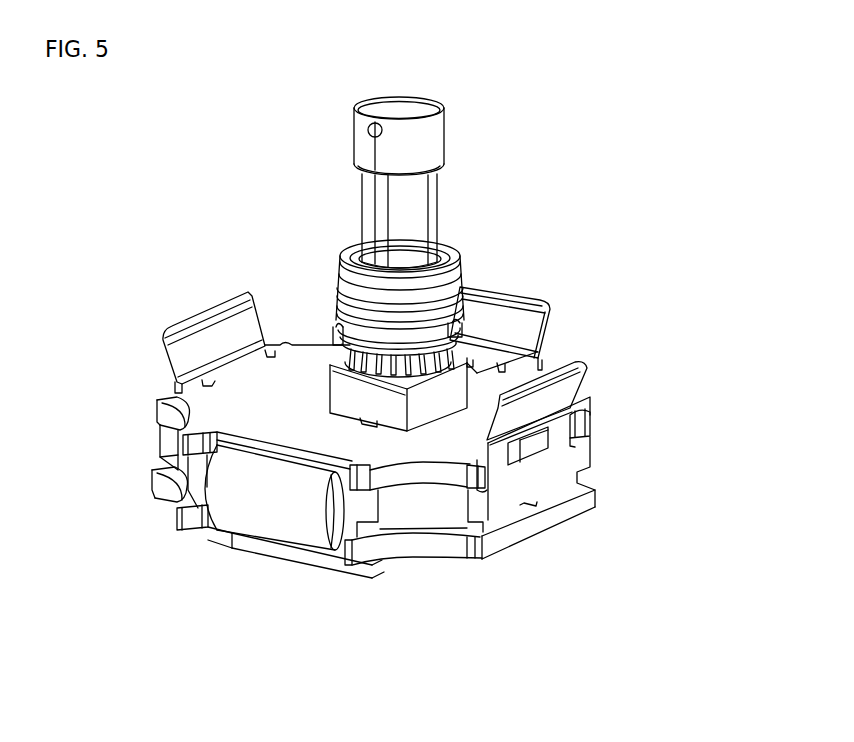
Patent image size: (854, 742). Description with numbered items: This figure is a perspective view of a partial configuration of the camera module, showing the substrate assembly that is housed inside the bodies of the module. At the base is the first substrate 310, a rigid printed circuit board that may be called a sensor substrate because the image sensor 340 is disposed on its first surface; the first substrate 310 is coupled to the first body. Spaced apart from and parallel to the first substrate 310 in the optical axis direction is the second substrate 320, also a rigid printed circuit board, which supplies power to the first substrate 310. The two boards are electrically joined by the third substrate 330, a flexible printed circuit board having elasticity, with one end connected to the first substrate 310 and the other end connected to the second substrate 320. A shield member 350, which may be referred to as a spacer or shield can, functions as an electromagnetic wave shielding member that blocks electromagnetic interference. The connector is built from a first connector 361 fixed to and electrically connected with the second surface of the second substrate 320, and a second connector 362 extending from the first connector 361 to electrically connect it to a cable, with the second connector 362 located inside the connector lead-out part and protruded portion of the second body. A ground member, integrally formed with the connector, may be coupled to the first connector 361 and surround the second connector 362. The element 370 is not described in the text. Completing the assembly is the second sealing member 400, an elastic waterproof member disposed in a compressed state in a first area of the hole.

The first substrate 310 is at (432, 547).
The second substrate 320 is at (393, 473).
The third substrate 330 is at (250, 500).
The image sensor 340 is at (272, 548).
The shield member 350 is at (533, 483).
The first connector 361 is at (448, 393).
The second connector 362 is at (423, 203).
The retaining cage 370 is at (460, 337).
The second sealing member 400 is at (340, 262).